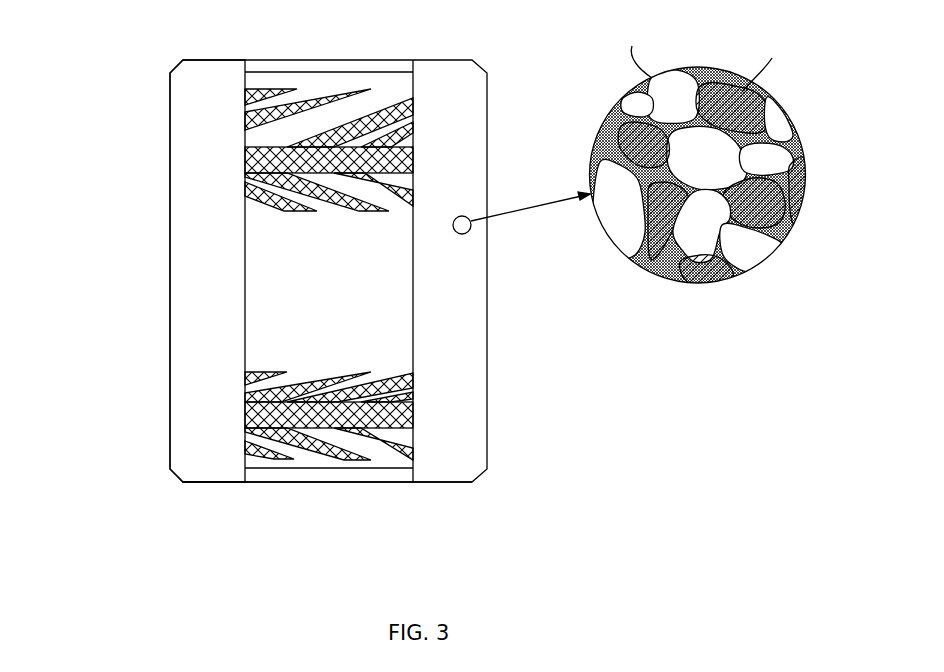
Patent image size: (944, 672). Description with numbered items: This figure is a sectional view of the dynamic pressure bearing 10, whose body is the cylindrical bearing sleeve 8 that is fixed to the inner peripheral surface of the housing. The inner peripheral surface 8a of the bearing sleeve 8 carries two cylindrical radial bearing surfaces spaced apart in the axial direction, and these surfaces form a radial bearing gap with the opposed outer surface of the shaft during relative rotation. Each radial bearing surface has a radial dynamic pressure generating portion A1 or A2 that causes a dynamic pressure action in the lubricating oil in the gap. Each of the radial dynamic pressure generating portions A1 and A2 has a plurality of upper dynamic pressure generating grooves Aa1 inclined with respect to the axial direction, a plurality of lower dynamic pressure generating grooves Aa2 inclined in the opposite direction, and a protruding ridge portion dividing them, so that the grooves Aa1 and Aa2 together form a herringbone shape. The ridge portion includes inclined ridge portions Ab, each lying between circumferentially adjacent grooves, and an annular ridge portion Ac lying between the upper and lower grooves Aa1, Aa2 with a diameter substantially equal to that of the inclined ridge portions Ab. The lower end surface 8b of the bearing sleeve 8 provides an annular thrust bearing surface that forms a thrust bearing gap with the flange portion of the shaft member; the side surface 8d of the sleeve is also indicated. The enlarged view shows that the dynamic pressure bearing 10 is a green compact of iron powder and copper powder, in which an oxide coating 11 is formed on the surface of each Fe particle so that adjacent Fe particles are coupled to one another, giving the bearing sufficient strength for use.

The bearing sleeve 8 is at (155, 88).
The dynamic pressure bearing 10 is at (310, 288).
The inner peripheral surface 8a is at (402, 283).
The lower end surface 8b is at (208, 485).
The side wall of bearing 8d is at (171, 208).
The radial dynamic pressure generating portion A1 is at (256, 134).
The radial dynamic pressure generating portion A2 is at (254, 389).
The upper dynamic pressure generating grooves Aa1 is at (288, 101).
The lower dynamic pressure generating grooves Aa2 is at (333, 196).
The inclined ridge portions Ab is at (338, 92).
The annular ridge portion Ac is at (283, 170).
The oxide coating 11 is at (658, 86).